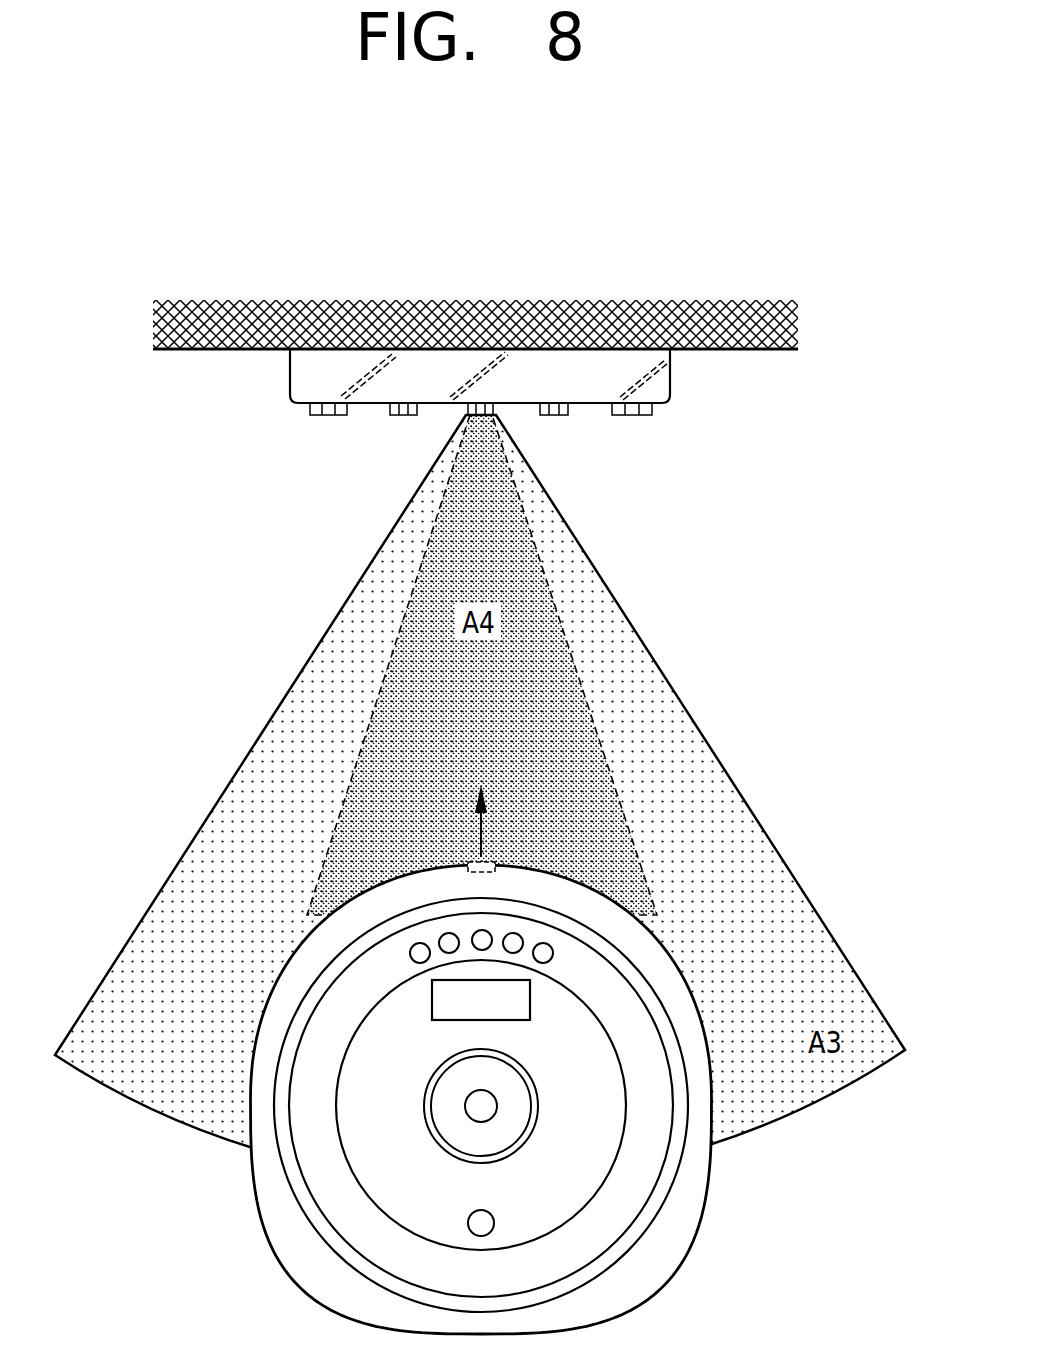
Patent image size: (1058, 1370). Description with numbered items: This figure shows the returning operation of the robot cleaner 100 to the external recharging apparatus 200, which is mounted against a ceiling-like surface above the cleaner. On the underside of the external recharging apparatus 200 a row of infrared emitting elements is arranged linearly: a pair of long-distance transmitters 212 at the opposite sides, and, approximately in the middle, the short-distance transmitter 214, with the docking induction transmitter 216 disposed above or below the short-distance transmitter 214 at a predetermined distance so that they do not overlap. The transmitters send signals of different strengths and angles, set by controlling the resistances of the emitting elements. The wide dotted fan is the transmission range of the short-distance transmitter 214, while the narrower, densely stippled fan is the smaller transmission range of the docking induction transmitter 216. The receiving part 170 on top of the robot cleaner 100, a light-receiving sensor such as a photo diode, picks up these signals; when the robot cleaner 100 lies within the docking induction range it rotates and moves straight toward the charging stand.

The robot cleaner 100 is at (716, 1229).
The receiving part 170 is at (493, 862).
The external recharging apparatus 200 is at (258, 378).
The long-distance transmitters 212 is at (310, 407).
The short-distance transmitter 214 is at (463, 407).
The docking induction transmitter 216 is at (468, 403).